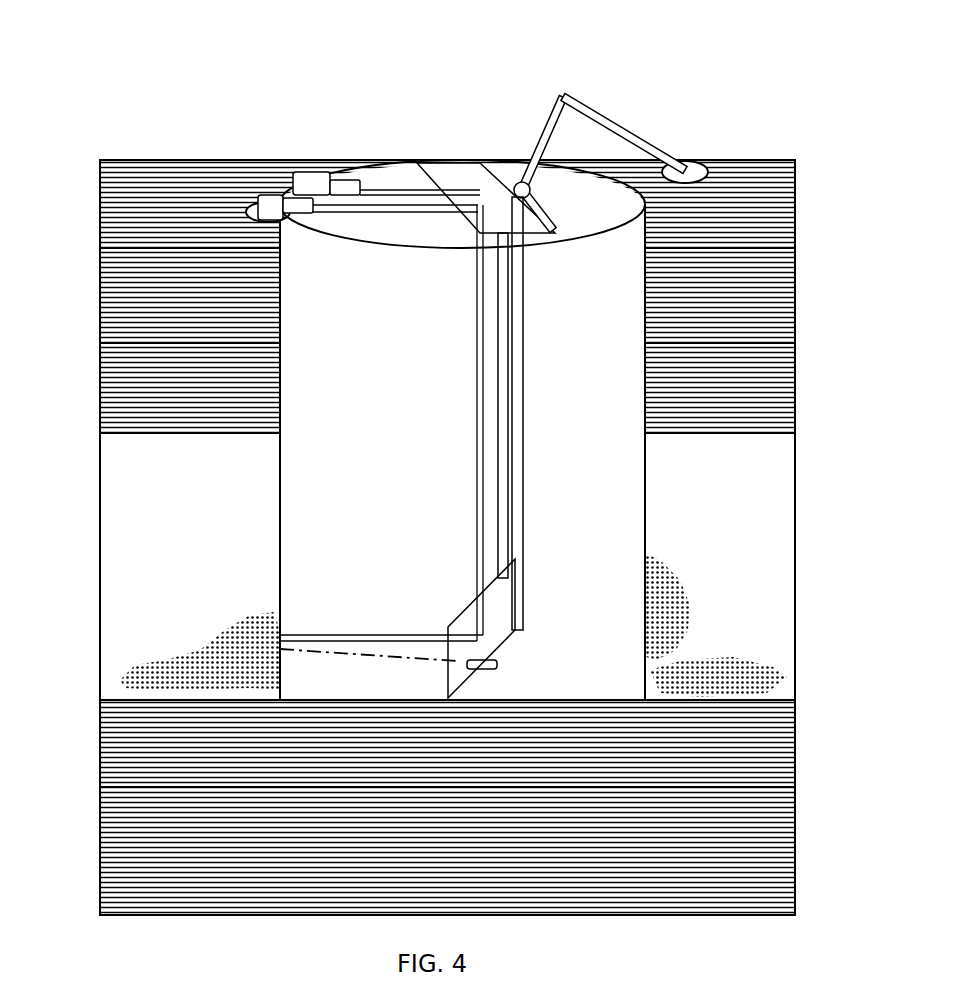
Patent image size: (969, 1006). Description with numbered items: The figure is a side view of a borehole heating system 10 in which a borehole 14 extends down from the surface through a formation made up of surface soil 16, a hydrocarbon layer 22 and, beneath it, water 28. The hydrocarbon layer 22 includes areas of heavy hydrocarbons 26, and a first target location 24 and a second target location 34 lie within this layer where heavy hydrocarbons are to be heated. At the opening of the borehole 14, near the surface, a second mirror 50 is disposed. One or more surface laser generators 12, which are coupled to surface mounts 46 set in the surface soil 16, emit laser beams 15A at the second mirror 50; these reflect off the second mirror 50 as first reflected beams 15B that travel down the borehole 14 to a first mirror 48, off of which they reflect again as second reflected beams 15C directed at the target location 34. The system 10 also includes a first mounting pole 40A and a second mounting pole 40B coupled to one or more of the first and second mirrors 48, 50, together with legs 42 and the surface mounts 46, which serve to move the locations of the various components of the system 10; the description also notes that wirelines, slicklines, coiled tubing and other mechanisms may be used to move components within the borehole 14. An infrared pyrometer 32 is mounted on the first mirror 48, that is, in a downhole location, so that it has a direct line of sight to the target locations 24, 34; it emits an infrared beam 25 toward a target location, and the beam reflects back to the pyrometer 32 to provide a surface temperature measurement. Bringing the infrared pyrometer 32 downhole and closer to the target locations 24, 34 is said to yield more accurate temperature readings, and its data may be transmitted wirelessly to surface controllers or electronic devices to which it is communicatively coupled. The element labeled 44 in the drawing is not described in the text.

The borehole heating system 10 is at (190, 74).
The laser generators 12 is at (315, 175).
The borehole 14 is at (300, 386).
The laser beams 15A is at (415, 200).
The first reflected beams 15B is at (475, 479).
The second reflected beams 15C is at (398, 634).
The surface soil 16 is at (780, 218).
The hydrocarbon layer 22 is at (780, 490).
The first target location 24 is at (676, 580).
The infrared beam 25 is at (353, 657).
The heavy hydrocarbons 26 is at (780, 678).
The water 28 is at (780, 748).
The infrared pyrometer 32 is at (487, 665).
The second target location 34 is at (130, 672).
The first mounting pole 40A is at (505, 341).
The second mounting pole 40B is at (522, 432).
The legs 42 is at (545, 123).
The connecting arm 44 is at (608, 120).
The surface mounts 46 is at (257, 208).
The first mirror 48 is at (510, 637).
The second mirror 50 is at (462, 177).